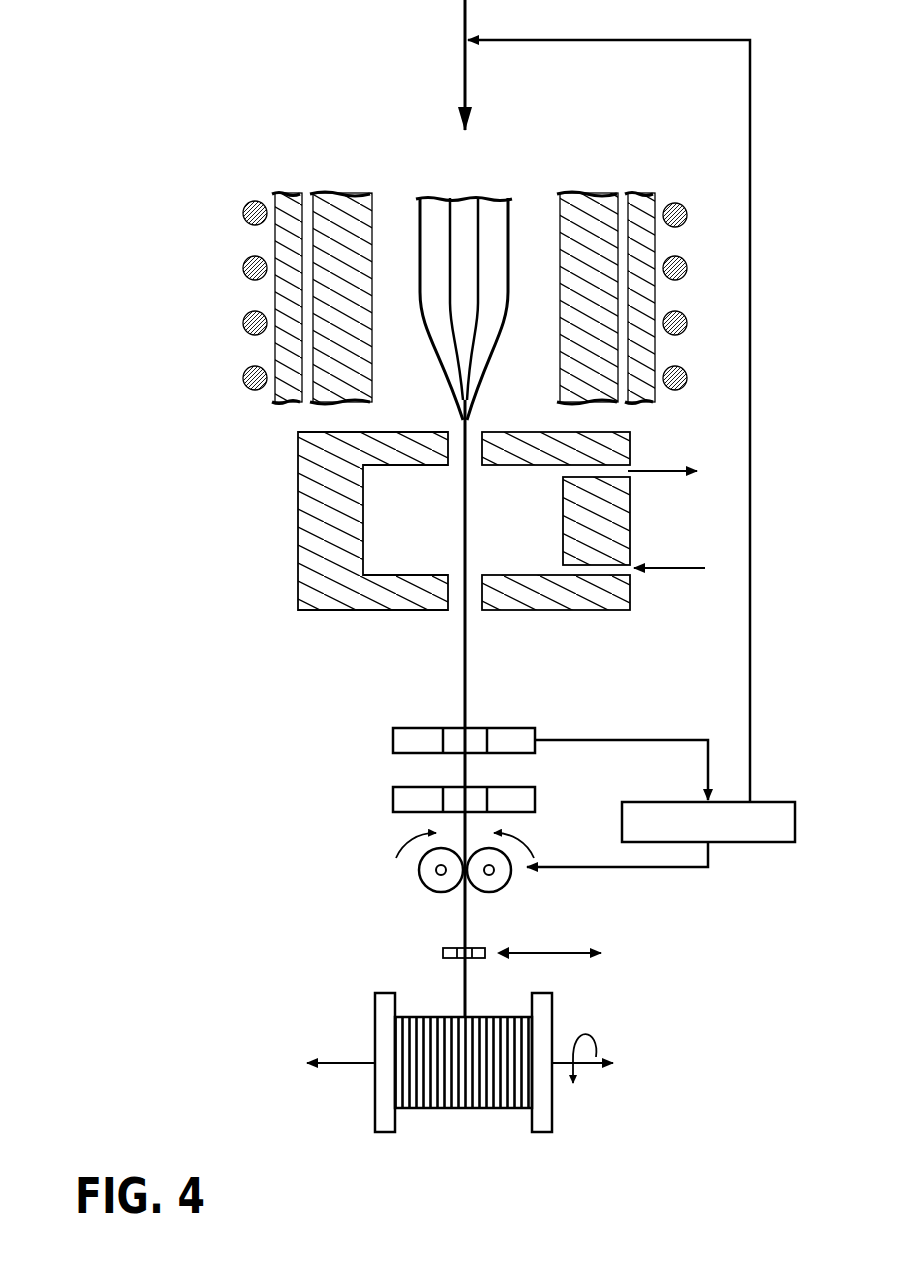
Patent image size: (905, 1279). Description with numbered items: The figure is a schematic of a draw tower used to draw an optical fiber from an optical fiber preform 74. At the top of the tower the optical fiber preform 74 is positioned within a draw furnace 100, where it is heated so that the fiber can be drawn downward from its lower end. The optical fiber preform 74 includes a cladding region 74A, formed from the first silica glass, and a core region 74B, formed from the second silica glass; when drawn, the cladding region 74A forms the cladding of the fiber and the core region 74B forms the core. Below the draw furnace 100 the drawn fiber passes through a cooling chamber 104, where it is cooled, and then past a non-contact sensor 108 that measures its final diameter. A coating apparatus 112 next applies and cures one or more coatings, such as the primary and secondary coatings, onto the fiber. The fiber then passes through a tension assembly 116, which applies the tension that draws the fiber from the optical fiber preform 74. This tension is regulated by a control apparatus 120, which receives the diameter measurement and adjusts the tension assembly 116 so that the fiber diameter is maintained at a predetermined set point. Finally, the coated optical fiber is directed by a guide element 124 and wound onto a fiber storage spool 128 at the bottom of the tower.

The draw furnace 100 is at (286, 189).
The optical fiber preform 74 is at (531, 197).
The cladding region 74A is at (430, 225).
The core region 74B is at (466, 213).
The cooling chamber 104 is at (298, 505).
The non-contact sensor 108 is at (393, 740).
The coating apparatus 112 is at (393, 798).
The tension assembly 116 is at (418, 870).
The control apparatus 120 is at (692, 832).
The guide element 124 is at (443, 953).
The fiber storage spool 128 is at (375, 1028).